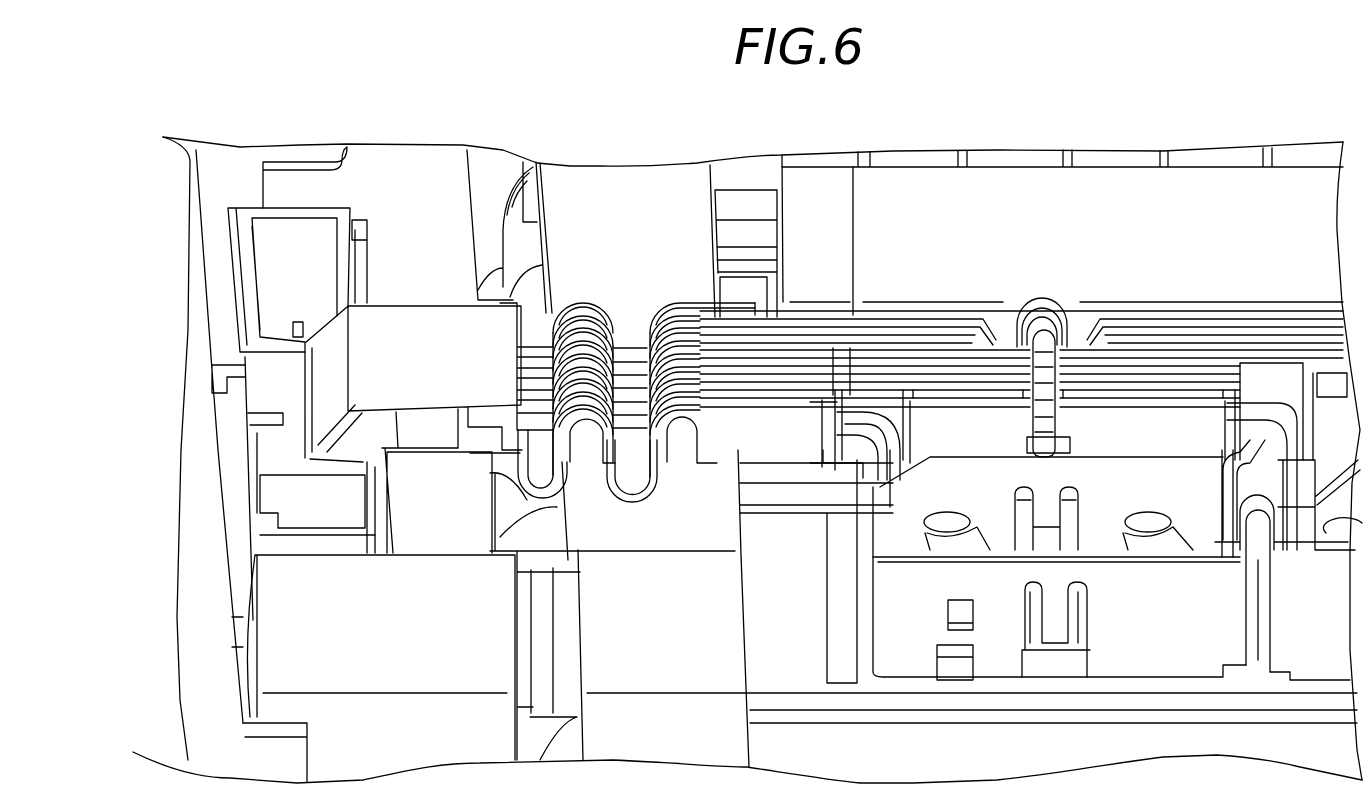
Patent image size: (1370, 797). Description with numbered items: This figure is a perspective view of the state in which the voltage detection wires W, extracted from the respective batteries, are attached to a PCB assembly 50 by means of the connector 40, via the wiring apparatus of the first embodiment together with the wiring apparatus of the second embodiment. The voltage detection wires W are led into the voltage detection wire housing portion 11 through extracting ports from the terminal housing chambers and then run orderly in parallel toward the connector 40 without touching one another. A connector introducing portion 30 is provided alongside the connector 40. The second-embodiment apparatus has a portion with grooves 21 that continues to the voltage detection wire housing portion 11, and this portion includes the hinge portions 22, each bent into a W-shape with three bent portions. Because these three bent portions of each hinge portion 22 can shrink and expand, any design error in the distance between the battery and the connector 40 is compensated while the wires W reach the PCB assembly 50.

The voltage detection wire housing portion 11 is at (907, 332).
The grooves 21 is at (577, 318).
The voltage detection wires W is at (632, 357).
The hinge portions 22 is at (537, 503).
The connector introducing portion 30 is at (413, 305).
The connector 40 is at (267, 449).
The PCB assembly 50 is at (267, 538).